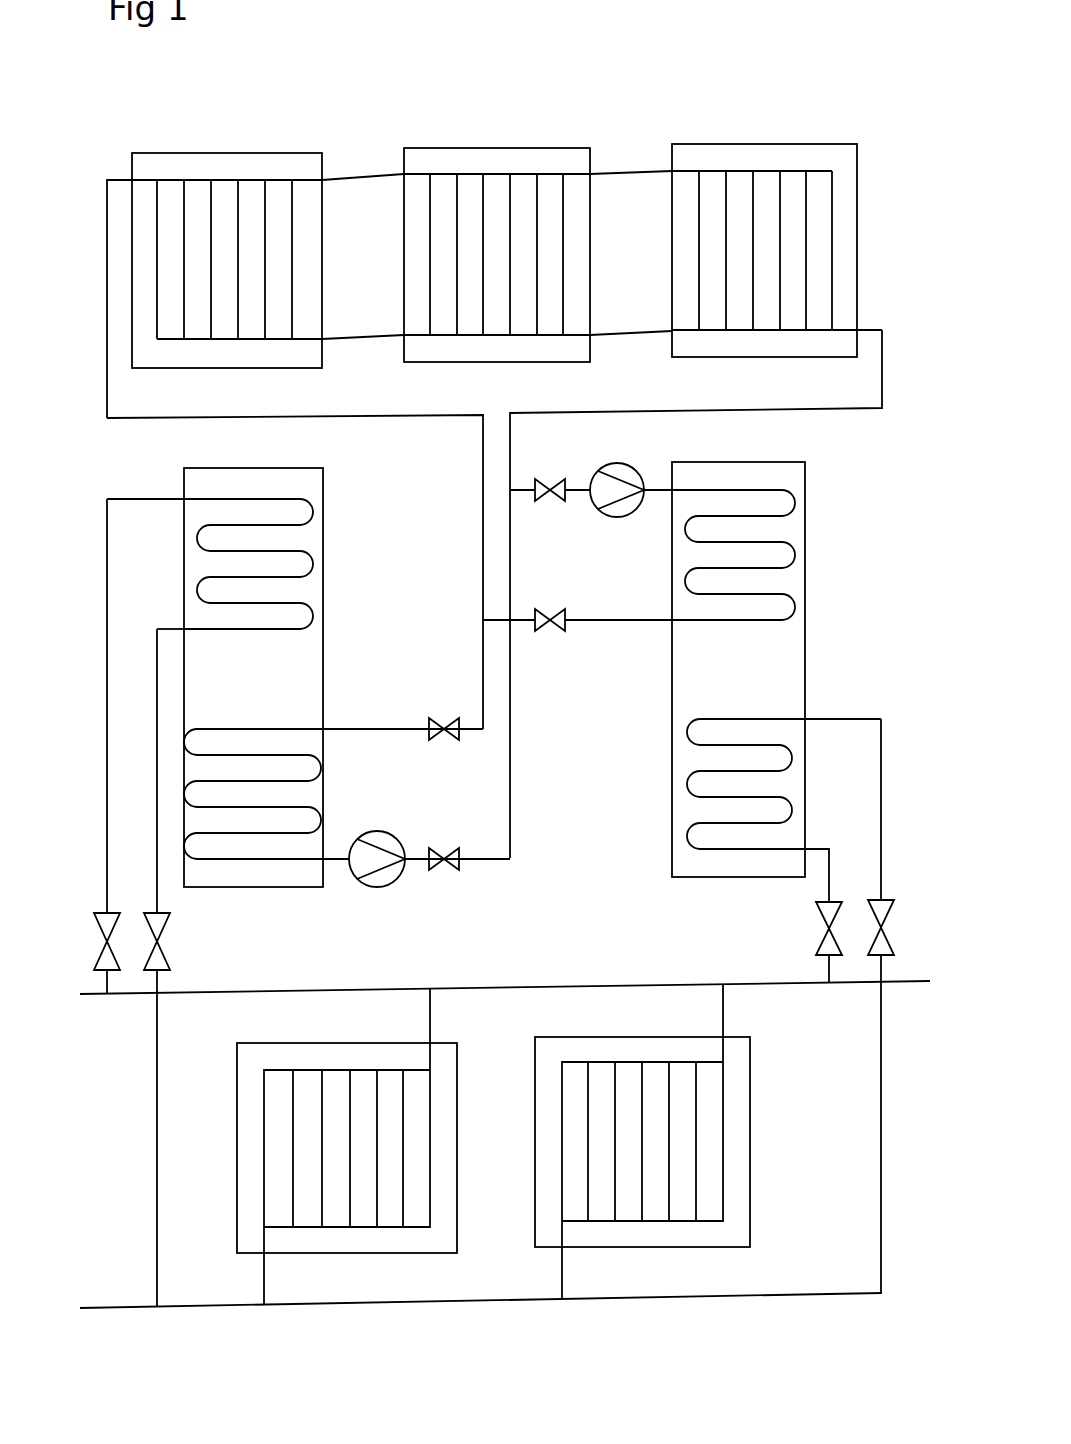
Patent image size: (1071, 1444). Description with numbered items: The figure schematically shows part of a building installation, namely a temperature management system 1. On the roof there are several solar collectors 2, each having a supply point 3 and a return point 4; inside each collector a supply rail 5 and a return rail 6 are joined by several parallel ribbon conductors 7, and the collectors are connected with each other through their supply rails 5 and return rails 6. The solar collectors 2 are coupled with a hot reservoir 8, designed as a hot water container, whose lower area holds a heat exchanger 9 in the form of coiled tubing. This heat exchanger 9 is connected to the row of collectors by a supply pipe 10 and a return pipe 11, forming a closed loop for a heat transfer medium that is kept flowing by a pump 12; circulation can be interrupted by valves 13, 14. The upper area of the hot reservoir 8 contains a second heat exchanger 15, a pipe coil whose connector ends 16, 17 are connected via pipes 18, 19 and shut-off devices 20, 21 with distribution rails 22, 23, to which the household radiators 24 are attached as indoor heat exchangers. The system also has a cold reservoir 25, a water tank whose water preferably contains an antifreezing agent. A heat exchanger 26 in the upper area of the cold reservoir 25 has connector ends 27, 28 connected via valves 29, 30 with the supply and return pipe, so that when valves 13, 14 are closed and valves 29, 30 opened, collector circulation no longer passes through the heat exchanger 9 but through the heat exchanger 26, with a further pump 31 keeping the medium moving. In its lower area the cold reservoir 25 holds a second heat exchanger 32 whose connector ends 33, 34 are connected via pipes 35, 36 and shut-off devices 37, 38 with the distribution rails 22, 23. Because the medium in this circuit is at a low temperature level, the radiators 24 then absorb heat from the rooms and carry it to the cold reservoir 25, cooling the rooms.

The temperature management system 1 is at (718, 94).
The solar collector 2 is at (302, 167).
The supply point 3 is at (323, 340).
The return point 4 is at (122, 178).
The supply rail 5 is at (820, 331).
The return rail 6 is at (792, 165).
The ribbon conductor 7 is at (810, 250).
The hot reservoir 8 is at (300, 648).
The heat exchanger 9 is at (258, 862).
The supply pipe 10 is at (842, 410).
The return pipe 11 is at (415, 418).
The pump 12 is at (386, 877).
The valve 13 is at (449, 871).
The valve 14 is at (443, 718).
The second heat exchanger 15 is at (238, 630).
The connector end 16 is at (184, 497).
The connector end 17 is at (184, 627).
The pipe 18 is at (106, 662).
The pipe 19 is at (157, 730).
The shut-off device 20 is at (92, 927).
The shut-off device 21 is at (160, 953).
The distribution rail 22 is at (900, 985).
The distribution rail 23 is at (893, 1296).
The radiator 24 is at (357, 1235).
The cold reservoir 25 is at (785, 655).
The heat exchanger 26 is at (765, 588).
The connector end 27 is at (665, 487).
The connector end 28 is at (665, 622).
The valve 29 is at (550, 478).
The valve 30 is at (550, 632).
The further pump 31 is at (613, 507).
The second heat exchanger 32 is at (688, 747).
The connector end 33 is at (805, 833).
The connector end 34 is at (820, 722).
The pipe 35 is at (827, 872).
The pipe 36 is at (882, 782).
The shut-off device 37 is at (820, 938).
The shut-off device 38 is at (890, 908).